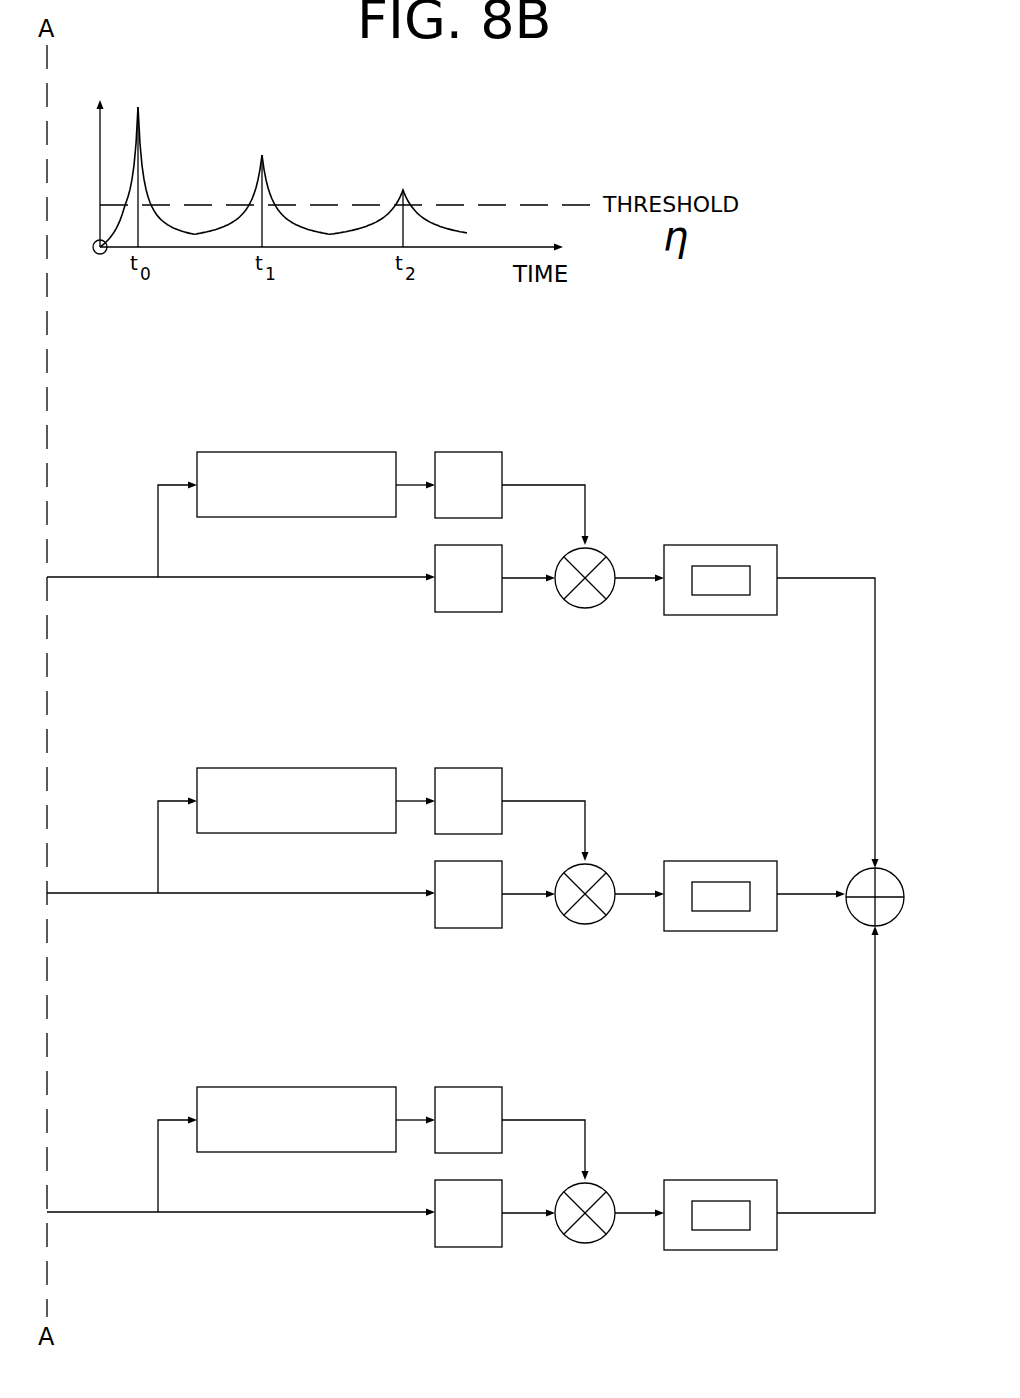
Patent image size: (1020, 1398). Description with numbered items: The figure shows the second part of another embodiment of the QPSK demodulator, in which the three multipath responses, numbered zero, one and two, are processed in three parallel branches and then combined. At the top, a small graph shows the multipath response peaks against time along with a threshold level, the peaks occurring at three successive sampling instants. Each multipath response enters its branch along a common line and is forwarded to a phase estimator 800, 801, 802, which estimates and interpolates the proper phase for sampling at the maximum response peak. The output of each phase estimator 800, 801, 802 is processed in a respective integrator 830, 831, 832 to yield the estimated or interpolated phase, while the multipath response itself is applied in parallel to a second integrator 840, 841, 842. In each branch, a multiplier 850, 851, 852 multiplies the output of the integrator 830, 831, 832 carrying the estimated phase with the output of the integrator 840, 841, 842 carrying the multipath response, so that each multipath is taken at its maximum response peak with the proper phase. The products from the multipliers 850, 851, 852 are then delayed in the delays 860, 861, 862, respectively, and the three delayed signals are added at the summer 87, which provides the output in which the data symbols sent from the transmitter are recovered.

The phase estimator 800 is at (242, 452).
The phase estimator 801 is at (242, 768).
The phase estimator 802 is at (242, 1087).
The integrator 830 is at (470, 452).
The integrator 831 is at (470, 768).
The integrator 832 is at (470, 1087).
The integrator 840 is at (467, 612).
The integrator 841 is at (467, 928).
The integrator 842 is at (467, 1247).
The multiplier 850 is at (560, 604).
The multiplier 851 is at (560, 920).
The multiplier 852 is at (607, 1191).
The delay 860 is at (748, 545).
The delay 861 is at (748, 861).
The delay 862 is at (748, 1180).
The summer 87 is at (856, 879).